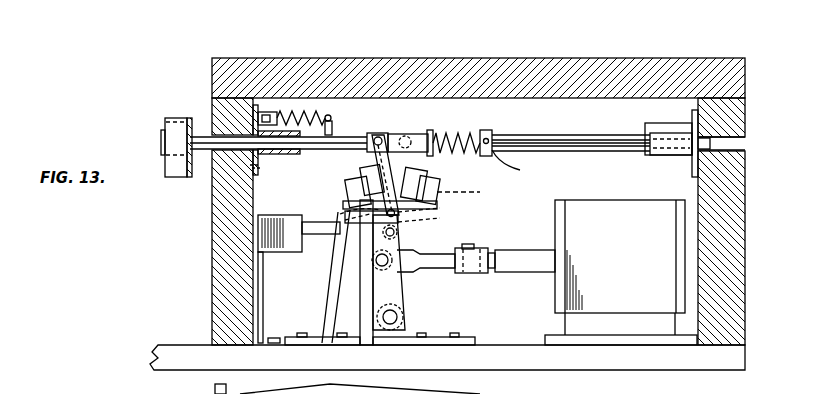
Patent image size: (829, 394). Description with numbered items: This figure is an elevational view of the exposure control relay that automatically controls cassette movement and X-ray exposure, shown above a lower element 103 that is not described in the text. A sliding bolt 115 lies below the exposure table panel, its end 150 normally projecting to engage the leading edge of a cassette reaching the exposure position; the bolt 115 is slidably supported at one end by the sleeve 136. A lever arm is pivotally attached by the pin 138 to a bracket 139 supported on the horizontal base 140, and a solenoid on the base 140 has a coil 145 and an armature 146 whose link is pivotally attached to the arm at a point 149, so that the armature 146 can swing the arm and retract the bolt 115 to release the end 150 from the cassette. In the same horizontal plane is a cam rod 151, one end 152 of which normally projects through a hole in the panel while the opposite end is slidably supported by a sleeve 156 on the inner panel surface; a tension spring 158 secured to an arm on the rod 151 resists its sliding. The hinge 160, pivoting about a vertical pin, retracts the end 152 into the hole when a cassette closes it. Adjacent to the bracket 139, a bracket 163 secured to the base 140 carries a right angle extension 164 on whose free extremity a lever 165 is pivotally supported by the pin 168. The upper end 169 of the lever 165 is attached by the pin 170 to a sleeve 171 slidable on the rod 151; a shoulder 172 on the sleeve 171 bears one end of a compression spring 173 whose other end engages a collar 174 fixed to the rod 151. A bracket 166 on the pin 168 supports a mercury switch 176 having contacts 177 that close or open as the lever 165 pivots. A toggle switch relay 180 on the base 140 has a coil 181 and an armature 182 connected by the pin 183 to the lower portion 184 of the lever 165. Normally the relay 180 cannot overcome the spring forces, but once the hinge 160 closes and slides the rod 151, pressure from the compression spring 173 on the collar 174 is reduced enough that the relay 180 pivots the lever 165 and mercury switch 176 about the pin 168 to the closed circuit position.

The indicator scale 103 is at (324, 387).
The sliding bolt 115 is at (592, 153).
The sleeve 136 is at (660, 127).
The pin 138 is at (404, 315).
The bracket 139 is at (466, 343).
The horizontal base 140 is at (620, 366).
The coil 145 is at (619, 206).
The armature 146 is at (535, 273).
The point 149 is at (388, 267).
The end 150 is at (211, 120).
The cam rod 151 is at (596, 140).
The end 152 is at (189, 140).
The sleeve 156 is at (682, 158).
The tension spring 158 is at (285, 112).
The hinge 160 is at (181, 170).
The bracket 163 is at (328, 299).
The right angle extension 164 is at (344, 206).
The lever 165 is at (366, 156).
The bracket 166 is at (432, 200).
The pin 168 is at (410, 216).
The upper end 169 is at (388, 210).
The pin 170 is at (378, 136).
The sleeve 171 is at (430, 132).
The shoulder 172 is at (425, 162).
The compression spring 173 is at (463, 134).
The collar 174 is at (491, 134).
The mercury switch 176 is at (518, 170).
The contacts 177 is at (352, 214).
The toggle switch relay 180 is at (283, 262).
The coil 181 is at (270, 214).
The armature 182 is at (326, 236).
The pin 183 is at (399, 238).
The lower portion 184 is at (478, 246).